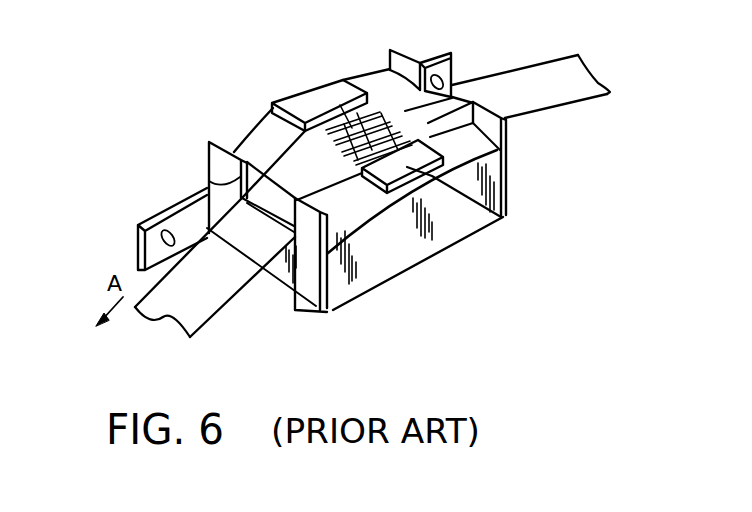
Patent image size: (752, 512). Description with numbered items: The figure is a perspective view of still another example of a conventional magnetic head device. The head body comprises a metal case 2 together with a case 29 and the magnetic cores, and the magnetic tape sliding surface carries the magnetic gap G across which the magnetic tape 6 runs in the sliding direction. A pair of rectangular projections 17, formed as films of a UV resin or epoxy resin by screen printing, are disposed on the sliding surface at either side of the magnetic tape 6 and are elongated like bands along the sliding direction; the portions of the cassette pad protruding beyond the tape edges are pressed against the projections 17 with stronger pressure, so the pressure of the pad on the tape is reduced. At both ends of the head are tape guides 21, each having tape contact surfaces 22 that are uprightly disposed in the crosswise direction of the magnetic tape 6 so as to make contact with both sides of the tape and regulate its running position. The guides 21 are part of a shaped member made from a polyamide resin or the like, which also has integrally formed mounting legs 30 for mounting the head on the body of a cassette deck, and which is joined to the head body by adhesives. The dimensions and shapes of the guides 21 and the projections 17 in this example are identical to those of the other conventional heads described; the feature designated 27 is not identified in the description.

The case 2 is at (388, 66).
The magnetic tape 6 is at (162, 308).
The rectangular projections 17 is at (288, 102).
The tape guides 21 is at (270, 277).
The tape contact surfaces 22 is at (210, 180).
The curved upper surface 27 is at (247, 147).
The case 29 is at (428, 245).
The mounting legs 30 is at (137, 225).
The magnetic gap G is at (356, 112).